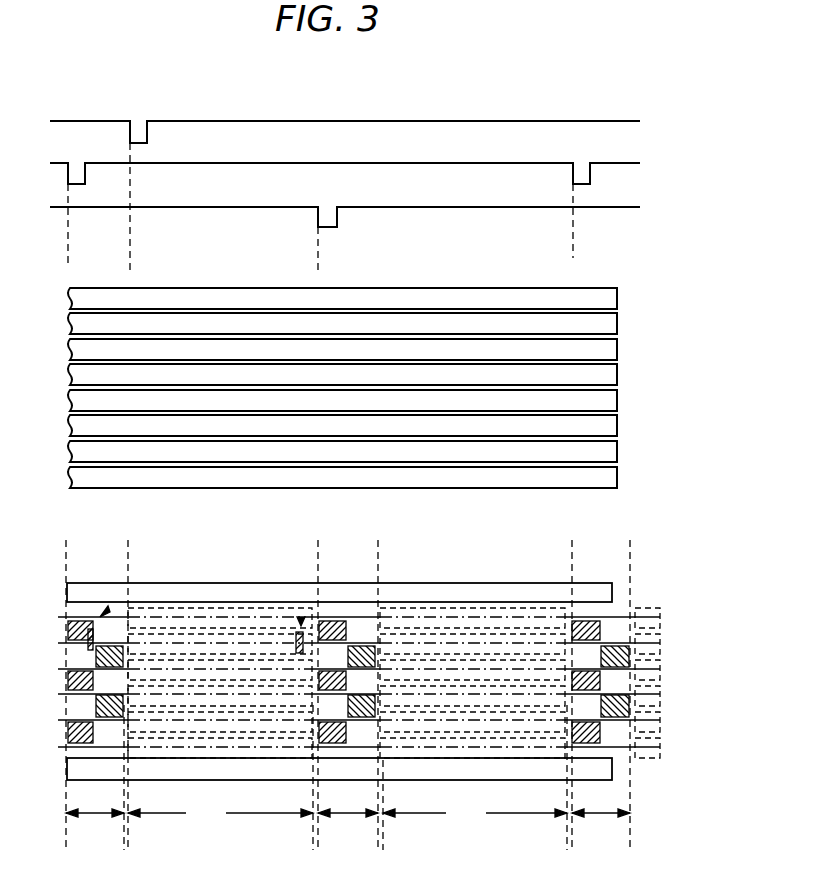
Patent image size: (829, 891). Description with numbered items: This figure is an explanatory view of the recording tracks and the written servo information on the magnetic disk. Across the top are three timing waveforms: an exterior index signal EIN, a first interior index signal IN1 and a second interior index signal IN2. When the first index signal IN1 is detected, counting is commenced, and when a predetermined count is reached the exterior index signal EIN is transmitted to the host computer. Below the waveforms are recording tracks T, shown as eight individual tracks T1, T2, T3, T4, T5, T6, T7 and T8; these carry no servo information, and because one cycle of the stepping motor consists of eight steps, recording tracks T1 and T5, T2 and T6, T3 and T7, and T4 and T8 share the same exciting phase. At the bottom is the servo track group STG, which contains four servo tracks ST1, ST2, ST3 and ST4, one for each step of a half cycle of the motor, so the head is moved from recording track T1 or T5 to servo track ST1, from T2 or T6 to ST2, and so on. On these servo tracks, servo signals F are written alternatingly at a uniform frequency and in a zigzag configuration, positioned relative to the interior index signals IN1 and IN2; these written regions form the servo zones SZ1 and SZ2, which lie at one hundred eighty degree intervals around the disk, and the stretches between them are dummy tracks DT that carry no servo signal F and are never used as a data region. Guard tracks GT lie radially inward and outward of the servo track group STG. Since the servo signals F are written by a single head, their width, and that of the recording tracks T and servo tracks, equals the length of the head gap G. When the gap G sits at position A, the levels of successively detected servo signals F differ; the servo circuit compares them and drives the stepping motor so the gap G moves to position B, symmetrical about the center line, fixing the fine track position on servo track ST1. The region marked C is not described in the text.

The exterior index signal EIN is at (362, 133).
The first interior index signal IN1 is at (360, 177).
The second interior index signal IN2 is at (360, 221).
The recording track T1 is at (617, 298).
The recording track T2 is at (617, 325).
The recording track T3 is at (617, 350).
The recording track T4 is at (617, 376).
The recording track T5 is at (617, 400).
The recording track T6 is at (617, 426).
The recording track T7 is at (617, 452).
The recording track T8 is at (617, 478).
The recording tracks T is at (673, 287).
The servo signals F is at (88, 619).
The position A is at (109, 607).
The gap G is at (88, 648).
The position B is at (302, 617).
The carrier region C is at (498, 670).
The guard tracks GT is at (650, 605).
The servo track ST1 is at (691, 647).
The servo track ST2 is at (691, 674).
The servo track ST3 is at (691, 699).
The servo track ST4 is at (691, 727).
The servo track group STG is at (707, 630).
The servo zone SZ1 is at (95, 815).
The servo zone SZ2 is at (345, 815).
The dummy tracks DT is at (347, 813).